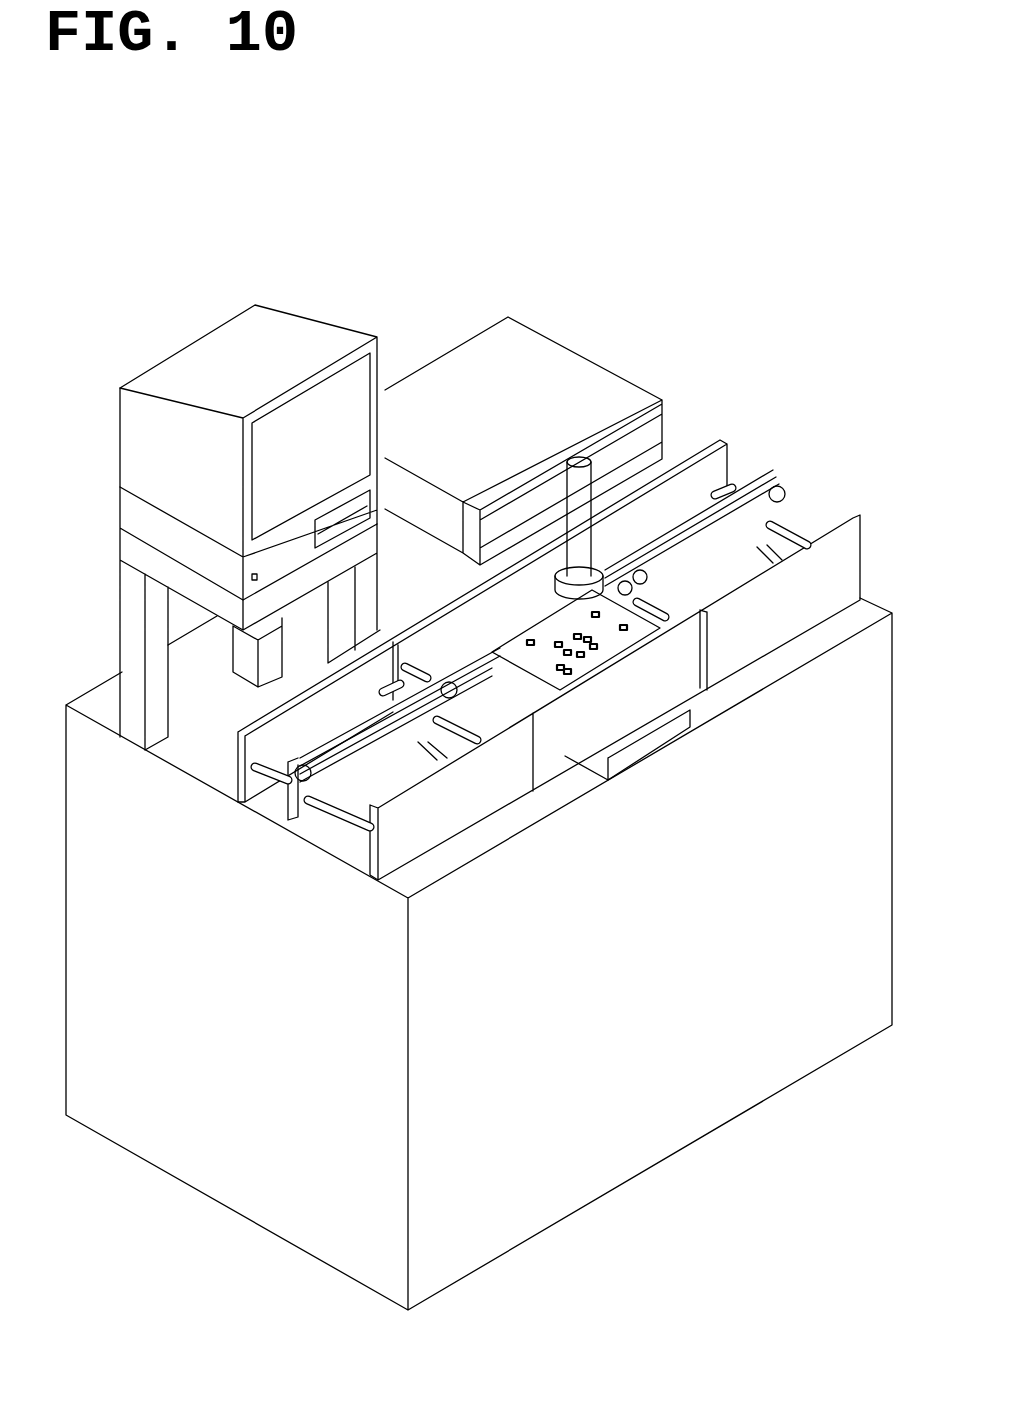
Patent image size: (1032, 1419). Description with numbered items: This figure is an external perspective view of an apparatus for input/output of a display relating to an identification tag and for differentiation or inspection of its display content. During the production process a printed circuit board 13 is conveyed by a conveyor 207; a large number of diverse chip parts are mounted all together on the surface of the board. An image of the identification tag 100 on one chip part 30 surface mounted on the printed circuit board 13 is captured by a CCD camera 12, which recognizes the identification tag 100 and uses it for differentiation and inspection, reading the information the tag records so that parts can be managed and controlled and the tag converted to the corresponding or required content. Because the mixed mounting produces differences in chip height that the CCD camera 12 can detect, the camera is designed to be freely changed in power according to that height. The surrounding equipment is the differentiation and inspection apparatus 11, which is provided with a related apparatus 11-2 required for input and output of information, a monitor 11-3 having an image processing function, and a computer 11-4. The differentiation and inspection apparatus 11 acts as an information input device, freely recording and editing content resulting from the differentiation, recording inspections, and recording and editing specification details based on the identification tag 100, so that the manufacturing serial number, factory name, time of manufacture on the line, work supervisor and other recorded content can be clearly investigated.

The differentiation and inspection apparatus 11 is at (229, 1139).
The related apparatus 11-2 is at (533, 378).
The monitor 11-3 is at (333, 347).
The computer 11-4 is at (213, 557).
The CCD camera 12 is at (582, 543).
The printed circuit board 13 is at (593, 660).
The chip part 30 is at (622, 632).
The identification tag 100 is at (630, 628).
The conveyor 207 is at (443, 790).